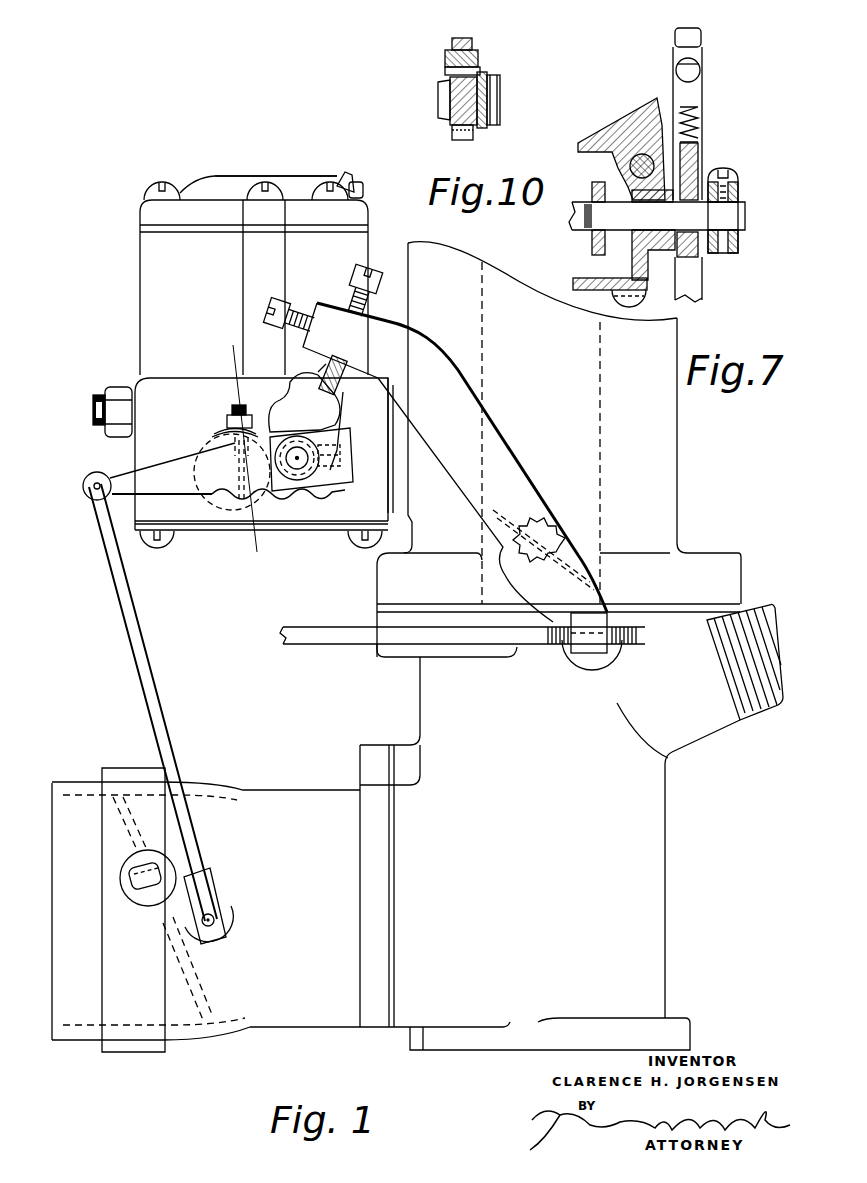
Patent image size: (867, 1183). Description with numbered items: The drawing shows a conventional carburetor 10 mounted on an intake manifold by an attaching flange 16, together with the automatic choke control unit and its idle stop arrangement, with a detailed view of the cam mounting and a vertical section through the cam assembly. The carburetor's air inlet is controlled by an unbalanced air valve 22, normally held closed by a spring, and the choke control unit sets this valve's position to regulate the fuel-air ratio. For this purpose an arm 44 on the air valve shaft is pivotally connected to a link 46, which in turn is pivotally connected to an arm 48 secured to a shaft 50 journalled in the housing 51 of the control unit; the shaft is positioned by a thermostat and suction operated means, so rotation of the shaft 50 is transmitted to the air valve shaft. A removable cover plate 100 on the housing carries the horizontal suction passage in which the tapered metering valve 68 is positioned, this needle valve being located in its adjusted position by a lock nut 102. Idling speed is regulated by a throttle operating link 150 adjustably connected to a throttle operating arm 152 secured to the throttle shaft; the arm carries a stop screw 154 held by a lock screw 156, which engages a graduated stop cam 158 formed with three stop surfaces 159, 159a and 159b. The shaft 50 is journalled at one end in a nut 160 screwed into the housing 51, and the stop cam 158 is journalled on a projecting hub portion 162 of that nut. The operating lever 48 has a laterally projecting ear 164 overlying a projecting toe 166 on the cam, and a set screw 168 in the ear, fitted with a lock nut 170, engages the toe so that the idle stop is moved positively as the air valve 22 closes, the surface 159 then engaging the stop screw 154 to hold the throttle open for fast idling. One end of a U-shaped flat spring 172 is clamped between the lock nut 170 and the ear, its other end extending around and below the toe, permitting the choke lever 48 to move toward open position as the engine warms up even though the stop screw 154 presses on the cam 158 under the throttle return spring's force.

In FIG. 1, the carburetor 10 is at (219, 349).
In FIG. 1, the attaching flange 16 is at (368, 849).
In FIG. 1, the air valve 22 is at (197, 992).
In FIG. 1, the arm 44 is at (168, 925).
In FIG. 1, the link 46 is at (166, 720).
In FIG. 1, the arm 48 is at (118, 470).
In FIG. 7, the arm 48 is at (740, 200).
In FIG. 10, the arm 48 is at (487, 71).
In FIG. 1, the shaft 50 is at (300, 465).
In FIG. 7, the shaft 50 is at (732, 218).
In FIG. 10, the shaft 50 is at (500, 98).
In FIG. 1, the housing 51 is at (357, 512).
In FIG. 1, the tapered metering valve 68 is at (364, 192).
In FIG. 1, the cover plate 100 is at (244, 186).
In FIG. 1, the lock nut 102 is at (342, 172).
In FIG. 1, the throttle operating link 150 is at (328, 640).
In FIG. 1, the throttle operating arm 152 is at (520, 466).
In FIG. 1, the stop screw 154 is at (380, 288).
In FIG. 7, the stop screw 154 is at (700, 40).
In FIG. 1, the lock screw 156 is at (283, 302).
In FIG. 7, the lock screw 156 is at (695, 70).
In FIG. 1, the graduated stop cam 158 is at (327, 410).
In FIG. 7, the graduated stop cam 158 is at (700, 168).
In FIG. 10, the graduated stop cam 158 is at (462, 102).
In FIG. 1, the stop surface 159 is at (345, 385).
In FIG. 1, the stop surface 159a is at (309, 363).
In FIG. 1, the stop surface 159b is at (290, 408).
In FIG. 7, the nut 160 is at (667, 243).
In FIG. 7, the projecting hub portion 162 is at (703, 250).
In FIG. 1, the laterally projecting ear 164 is at (235, 447).
In FIG. 1, the projecting toe 166 is at (236, 452).
In FIG. 1, the set screw 168 is at (238, 406).
In FIG. 10, the set screw 168 is at (462, 40).
In FIG. 1, the lock nut 170 is at (228, 424).
In FIG. 10, the lock nut 170 is at (448, 58).
In FIG. 1, the spring 172 is at (214, 434).
In FIG. 10, the spring 172 is at (478, 68).